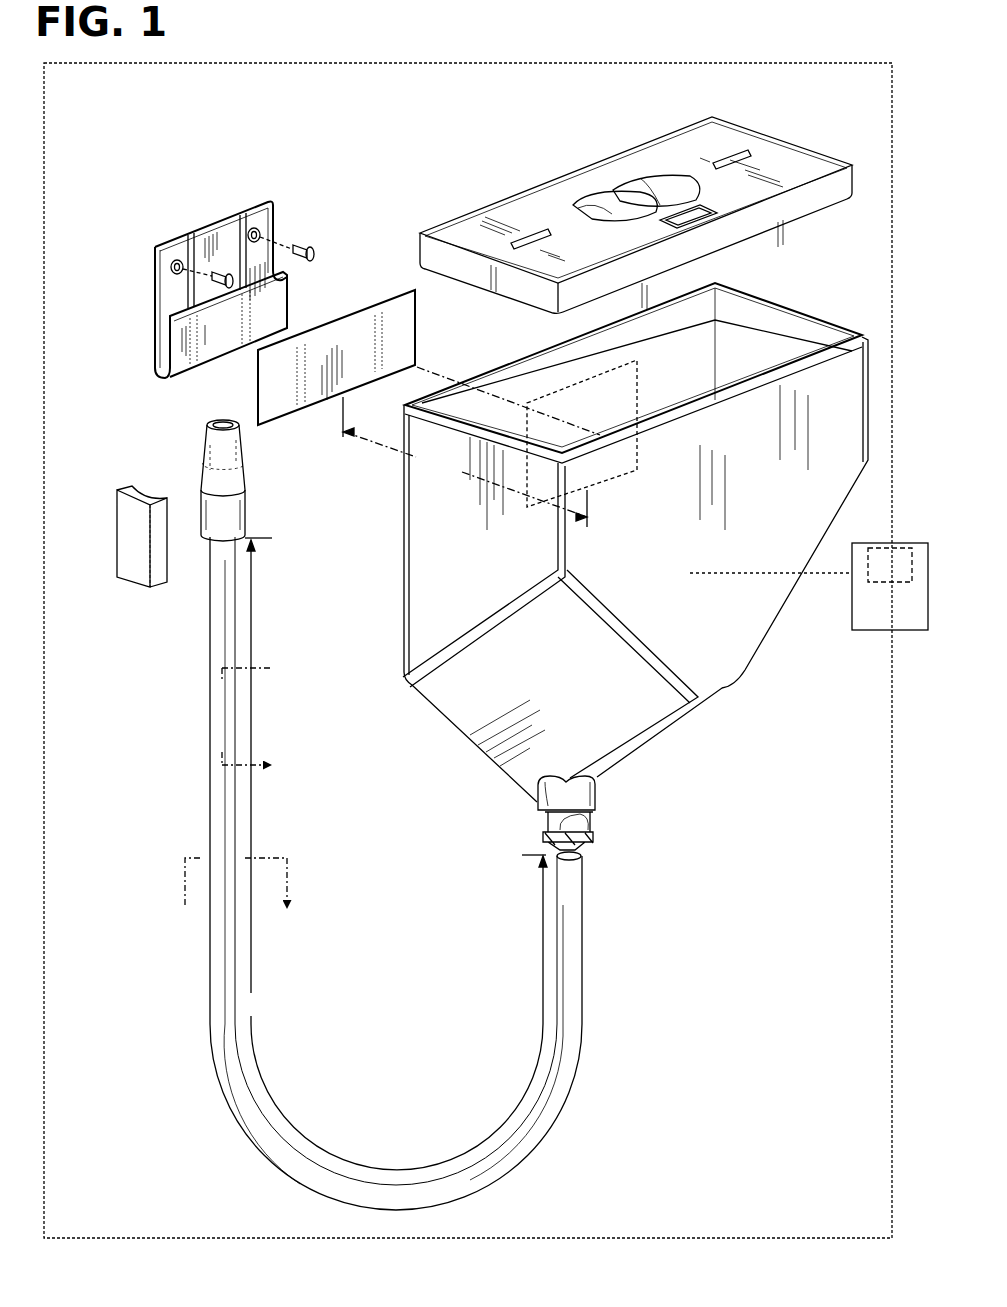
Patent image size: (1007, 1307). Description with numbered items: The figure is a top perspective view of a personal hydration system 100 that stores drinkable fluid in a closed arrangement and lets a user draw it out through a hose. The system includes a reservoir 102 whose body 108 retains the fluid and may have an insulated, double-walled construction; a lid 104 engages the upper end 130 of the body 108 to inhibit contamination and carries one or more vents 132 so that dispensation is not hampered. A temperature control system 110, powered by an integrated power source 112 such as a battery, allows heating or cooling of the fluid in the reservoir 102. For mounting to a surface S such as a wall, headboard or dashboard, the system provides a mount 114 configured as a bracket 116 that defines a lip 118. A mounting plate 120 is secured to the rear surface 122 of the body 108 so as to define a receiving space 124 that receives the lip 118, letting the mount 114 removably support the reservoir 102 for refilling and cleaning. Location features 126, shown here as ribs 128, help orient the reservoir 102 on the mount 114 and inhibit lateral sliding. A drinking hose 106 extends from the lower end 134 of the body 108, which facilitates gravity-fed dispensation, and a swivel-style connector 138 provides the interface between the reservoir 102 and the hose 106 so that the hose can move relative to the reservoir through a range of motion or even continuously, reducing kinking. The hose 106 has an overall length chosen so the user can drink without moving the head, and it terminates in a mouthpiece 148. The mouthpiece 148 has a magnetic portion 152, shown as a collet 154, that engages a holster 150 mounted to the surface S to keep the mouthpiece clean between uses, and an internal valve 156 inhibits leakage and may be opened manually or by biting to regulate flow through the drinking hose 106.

The surface S is at (507, 614).
The personal hydration system 100 is at (289, 268).
The reservoir 102 is at (641, 585).
The lid 104 is at (636, 207).
The drinking hose 106 is at (390, 873).
The body 108 is at (732, 557).
The temperature control system 110 is at (820, 593).
The integrated power source 112 is at (909, 531).
The mount 114 is at (217, 284).
The bracket 116 is at (223, 259).
The lip 118 is at (123, 333).
The mounting plate 120 is at (384, 357).
The rear surface 122 is at (569, 593).
The receiving space 124 is at (490, 443).
The location features 126 is at (177, 351).
The ribs 128 is at (224, 279).
The upper end 130 is at (634, 356).
The vents 132 is at (659, 187).
The lower end 134 is at (550, 656).
The swivel-style connector 138 is at (651, 882).
The mouthpiece 148 is at (221, 492).
The holster 150 is at (115, 563).
The magnetic portion 152 is at (273, 492).
The collet 154 is at (270, 514).
The internal valve 156 is at (269, 458).